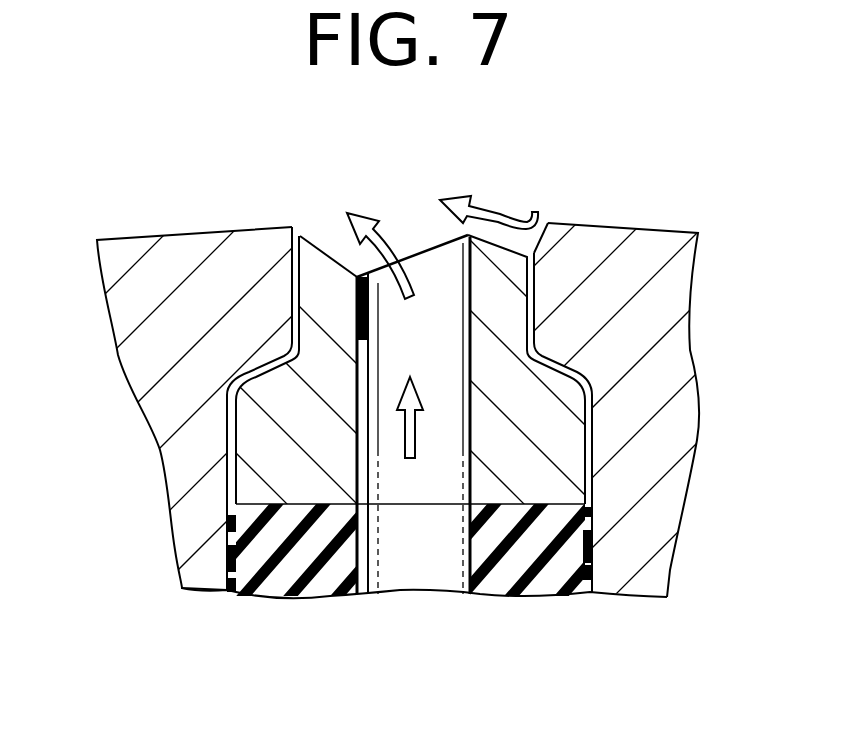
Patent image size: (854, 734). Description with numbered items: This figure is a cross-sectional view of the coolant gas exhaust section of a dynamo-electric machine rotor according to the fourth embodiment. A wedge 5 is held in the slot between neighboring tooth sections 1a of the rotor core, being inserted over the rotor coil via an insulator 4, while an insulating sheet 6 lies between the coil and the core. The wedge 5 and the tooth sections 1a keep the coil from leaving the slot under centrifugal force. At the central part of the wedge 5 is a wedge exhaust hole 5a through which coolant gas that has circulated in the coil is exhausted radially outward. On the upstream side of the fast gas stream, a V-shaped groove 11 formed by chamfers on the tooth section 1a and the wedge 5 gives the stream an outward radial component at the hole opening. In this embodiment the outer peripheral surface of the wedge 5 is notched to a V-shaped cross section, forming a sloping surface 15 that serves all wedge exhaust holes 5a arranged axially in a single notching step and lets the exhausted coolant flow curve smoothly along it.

The tooth section 1a is at (630, 257).
The V-shaped groove 11 is at (548, 223).
The sloping surface 15 is at (320, 240).
The wedge 5 is at (273, 466).
The wedge exhaust hole 5a is at (437, 467).
The insulator 4 is at (273, 530).
The insulating sheet 6 is at (232, 580).